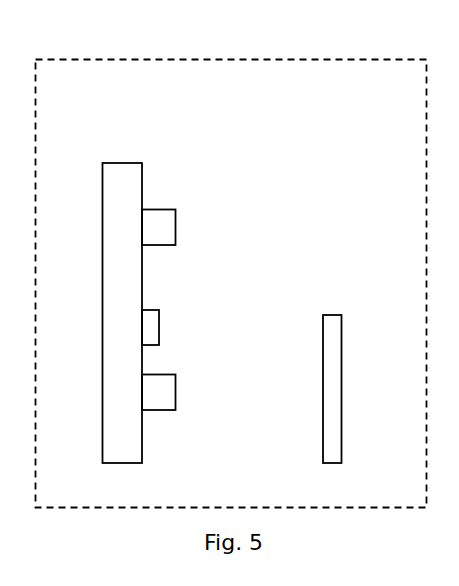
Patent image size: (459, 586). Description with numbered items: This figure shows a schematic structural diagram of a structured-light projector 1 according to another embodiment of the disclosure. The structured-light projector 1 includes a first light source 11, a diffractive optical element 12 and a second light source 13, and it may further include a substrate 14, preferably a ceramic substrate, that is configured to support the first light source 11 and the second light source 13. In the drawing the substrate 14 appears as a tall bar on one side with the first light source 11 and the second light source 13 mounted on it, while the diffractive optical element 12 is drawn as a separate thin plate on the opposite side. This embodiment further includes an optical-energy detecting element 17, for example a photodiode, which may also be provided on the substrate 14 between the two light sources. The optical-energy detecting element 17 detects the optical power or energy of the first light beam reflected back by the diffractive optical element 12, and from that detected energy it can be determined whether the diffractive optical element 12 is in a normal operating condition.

The structured-light projector 1 is at (222, 59).
The first light source 11 is at (157, 374).
The diffractive optical element 12 is at (330, 315).
The second light source 13 is at (170, 209).
The substrate 14 is at (123, 163).
The optical-energy detecting element 17 is at (153, 310).